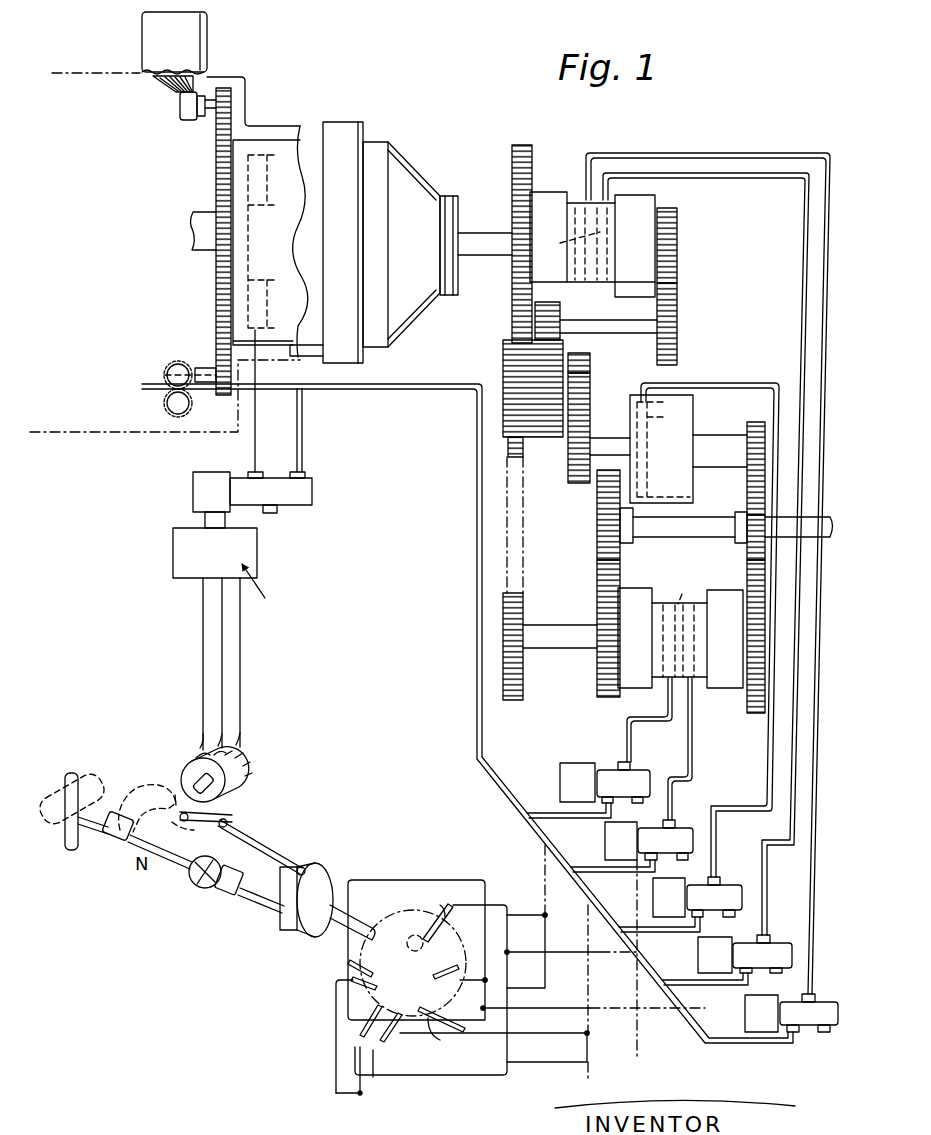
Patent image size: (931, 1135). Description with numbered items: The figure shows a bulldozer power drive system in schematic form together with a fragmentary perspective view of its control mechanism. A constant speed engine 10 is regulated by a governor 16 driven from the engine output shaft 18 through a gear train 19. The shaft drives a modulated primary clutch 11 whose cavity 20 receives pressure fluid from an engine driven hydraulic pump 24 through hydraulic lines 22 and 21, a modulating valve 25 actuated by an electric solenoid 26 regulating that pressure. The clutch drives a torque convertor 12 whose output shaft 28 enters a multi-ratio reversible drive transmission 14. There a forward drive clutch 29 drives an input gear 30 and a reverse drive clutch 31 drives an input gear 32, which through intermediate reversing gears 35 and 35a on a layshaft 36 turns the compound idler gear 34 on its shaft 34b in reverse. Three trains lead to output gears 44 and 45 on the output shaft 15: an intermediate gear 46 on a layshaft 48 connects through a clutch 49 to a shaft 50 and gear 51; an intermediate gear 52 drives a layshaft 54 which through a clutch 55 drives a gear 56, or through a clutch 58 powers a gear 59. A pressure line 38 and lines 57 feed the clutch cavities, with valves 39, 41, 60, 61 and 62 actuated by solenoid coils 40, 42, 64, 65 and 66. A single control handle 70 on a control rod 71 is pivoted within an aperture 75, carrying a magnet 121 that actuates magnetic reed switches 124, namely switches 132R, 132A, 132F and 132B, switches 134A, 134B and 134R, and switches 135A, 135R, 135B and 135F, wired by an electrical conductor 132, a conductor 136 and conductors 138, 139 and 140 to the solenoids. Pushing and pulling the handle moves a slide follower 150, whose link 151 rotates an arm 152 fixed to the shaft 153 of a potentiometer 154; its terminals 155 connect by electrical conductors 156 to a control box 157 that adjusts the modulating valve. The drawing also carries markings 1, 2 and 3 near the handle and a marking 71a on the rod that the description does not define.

The engine 10 is at (92, 72).
The governor 16 is at (208, 40).
The gear train 19 is at (175, 100).
The output shaft of the engine 18 is at (209, 219).
The primary clutch 11 is at (264, 144).
The cavity 20 is at (264, 205).
The torque convertor 12 is at (415, 177).
The output shaft 28 is at (484, 241).
The engine driven hydraulic pump 24 is at (164, 393).
The hydraulic line 22 is at (348, 393).
The hydraulic line 21 is at (253, 447).
The electric solenoid 26 is at (193, 490).
The modulating valve 25 is at (312, 495).
The control box 157 is at (258, 548).
The electrical conductors 156 is at (213, 603).
The terminals 155 is at (200, 728).
The potentiometer 154 is at (198, 753).
The shaft 153 is at (187, 786).
The control handle 70 is at (82, 790).
The position 2 is at (147, 799).
The position 3 is at (138, 840).
The position 1 is at (173, 799).
The aperture 75 is at (187, 836).
The ball joint 71a is at (198, 883).
The control rod 71 is at (245, 893).
The slide follower 150 is at (333, 885).
The link 151 is at (272, 858).
The arm 152 is at (233, 816).
The multi-ratio reversible drive transmission 14 is at (646, 442).
The input gear 30 is at (533, 158).
The forward drive clutch 29 is at (554, 197).
The reverse drive clutch 31 is at (650, 205).
The input gear 32 is at (678, 228).
The intermediate reversing gear 35 is at (678, 338).
The intermediate reversing gear 35a is at (561, 313).
The layshaft 36 is at (628, 329).
The compound idler gear 34 is at (505, 372).
The shaft 34b is at (567, 355).
The intermediate gear 46 is at (570, 477).
The layshaft 48 is at (605, 440).
The clutch 49 is at (679, 398).
The shaft 50 is at (717, 440).
The gear 51 is at (758, 419).
The output gear 45 is at (748, 506).
The output shaft 15 is at (828, 525).
The output gear 44 is at (599, 550).
The gear 59 is at (597, 680).
The clutch 58 is at (634, 592).
The clutch 55 is at (722, 595).
The gear 56 is at (751, 716).
The layshaft 54 is at (558, 634).
The intermediate gear 52 is at (503, 673).
The pressure line 38 is at (705, 173).
The lines 57 is at (690, 708).
The solenoid coil 66 is at (578, 768).
The valve 62 is at (612, 770).
The solenoid coil 65 is at (605, 830).
The valve 61 is at (687, 825).
The solenoid coil 64 is at (653, 888).
The valve 60 is at (730, 884).
The solenoid coil 42 is at (698, 945).
The valve 41 is at (778, 943).
The solenoid coil 40 is at (745, 1005).
The valve 39 is at (808, 1030).
The magnetic reed switches 124 is at (383, 1008).
The magnet 121 is at (400, 947).
The switch 132A is at (428, 923).
The switch 132R is at (445, 917).
The switch 132F is at (423, 977).
The switch 132B is at (429, 1009).
The switch 135F is at (350, 962).
The switch 135B is at (352, 983).
The switch 135R is at (360, 1015).
The switch 135A is at (383, 1030).
The switch 134A is at (436, 1038).
The switch 134R is at (392, 1047).
The switch 134B is at (405, 1040).
The electrical conductor 132 is at (481, 880).
The conductor 136 is at (502, 904).
The conductor 138 is at (545, 865).
The conductor 139 is at (588, 923).
The conductor 140 is at (629, 1004).